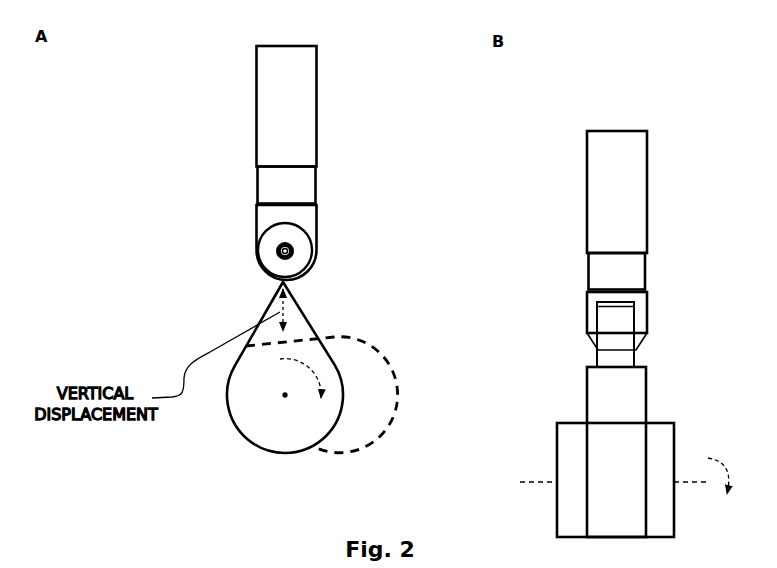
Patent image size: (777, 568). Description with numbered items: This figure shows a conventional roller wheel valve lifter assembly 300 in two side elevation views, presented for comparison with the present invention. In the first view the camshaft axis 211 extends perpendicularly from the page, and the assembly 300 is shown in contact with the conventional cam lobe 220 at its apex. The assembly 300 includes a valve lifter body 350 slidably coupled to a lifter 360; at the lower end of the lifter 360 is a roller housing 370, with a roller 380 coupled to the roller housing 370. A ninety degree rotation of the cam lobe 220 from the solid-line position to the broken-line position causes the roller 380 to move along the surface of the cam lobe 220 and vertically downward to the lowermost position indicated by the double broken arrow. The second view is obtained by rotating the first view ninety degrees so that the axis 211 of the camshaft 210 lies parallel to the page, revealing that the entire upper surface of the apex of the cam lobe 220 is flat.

The conventional roller wheel valve lifter assembly 300 is at (562, 167).
The valve lifter body 350 is at (682, 138).
The lifter 360 is at (683, 235).
The roller housing 370 is at (262, 219).
The roller 380 is at (300, 272).
The conventional cam lobe 220 is at (297, 313).
The camshaft axis 211 is at (285, 395).
The camshaft 210 is at (568, 498).